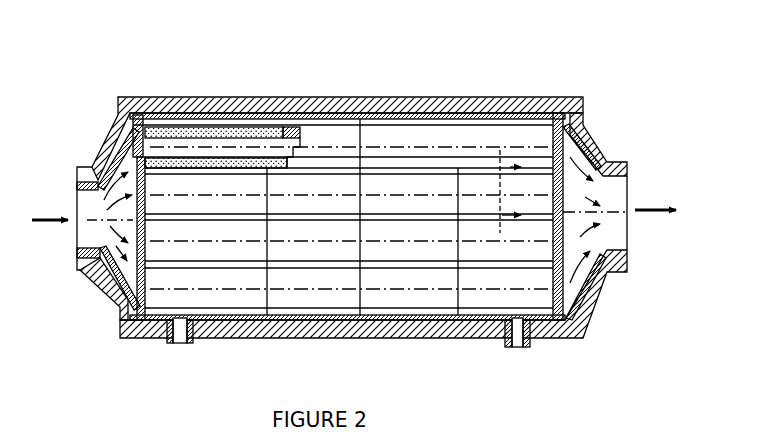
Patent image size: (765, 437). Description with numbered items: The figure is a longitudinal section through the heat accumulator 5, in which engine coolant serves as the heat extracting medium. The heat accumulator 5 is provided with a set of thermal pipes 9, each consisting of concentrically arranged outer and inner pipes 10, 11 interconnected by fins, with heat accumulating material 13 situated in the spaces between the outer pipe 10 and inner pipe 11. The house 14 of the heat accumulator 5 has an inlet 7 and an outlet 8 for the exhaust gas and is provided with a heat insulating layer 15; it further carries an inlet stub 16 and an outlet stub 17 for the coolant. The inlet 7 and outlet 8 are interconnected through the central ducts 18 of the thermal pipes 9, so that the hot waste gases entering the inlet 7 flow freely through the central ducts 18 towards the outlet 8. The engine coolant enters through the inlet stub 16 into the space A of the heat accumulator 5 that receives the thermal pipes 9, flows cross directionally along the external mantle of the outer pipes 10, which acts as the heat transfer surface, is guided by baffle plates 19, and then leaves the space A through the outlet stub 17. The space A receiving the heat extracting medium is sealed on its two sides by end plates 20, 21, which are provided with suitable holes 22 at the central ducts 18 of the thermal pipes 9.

The heat accumulator 5 is at (360, 209).
The inlet 7 is at (90, 246).
The outlet 8 is at (617, 183).
The thermal pipes 9 is at (350, 288).
The outer pipe 10 is at (218, 127).
The inner pipe 11 is at (290, 134).
The heat accumulating material 13 is at (185, 137).
The house 14 is at (450, 100).
The heat insulating layer 15 is at (505, 96).
The inlet stub 16 is at (518, 353).
The outlet stub 17 is at (181, 348).
The central duct 18 is at (268, 146).
The baffle plates 19 is at (456, 274).
The end plate 20 is at (132, 280).
The end plate 21 is at (565, 283).
The holes 22 is at (110, 152).
The space A is at (521, 125).